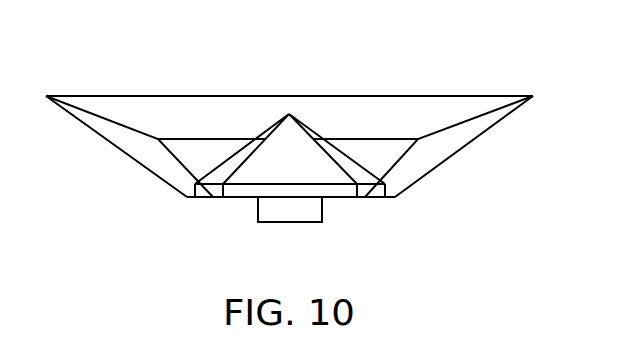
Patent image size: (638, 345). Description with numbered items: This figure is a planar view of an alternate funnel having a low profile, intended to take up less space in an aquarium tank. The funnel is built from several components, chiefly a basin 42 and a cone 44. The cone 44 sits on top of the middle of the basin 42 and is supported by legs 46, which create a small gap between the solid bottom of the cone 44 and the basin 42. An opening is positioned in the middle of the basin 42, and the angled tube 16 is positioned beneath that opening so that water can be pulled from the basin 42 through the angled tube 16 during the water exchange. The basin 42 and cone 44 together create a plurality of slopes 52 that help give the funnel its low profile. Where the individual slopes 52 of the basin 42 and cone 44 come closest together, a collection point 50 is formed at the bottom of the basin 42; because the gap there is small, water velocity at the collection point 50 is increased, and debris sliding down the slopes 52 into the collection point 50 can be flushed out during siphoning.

The angled tube 16 is at (280, 223).
The basin 42 is at (378, 95).
The cone 44 is at (289, 113).
The legs 46 is at (392, 198).
The collection point 50 is at (192, 198).
The slopes 52 is at (232, 157).